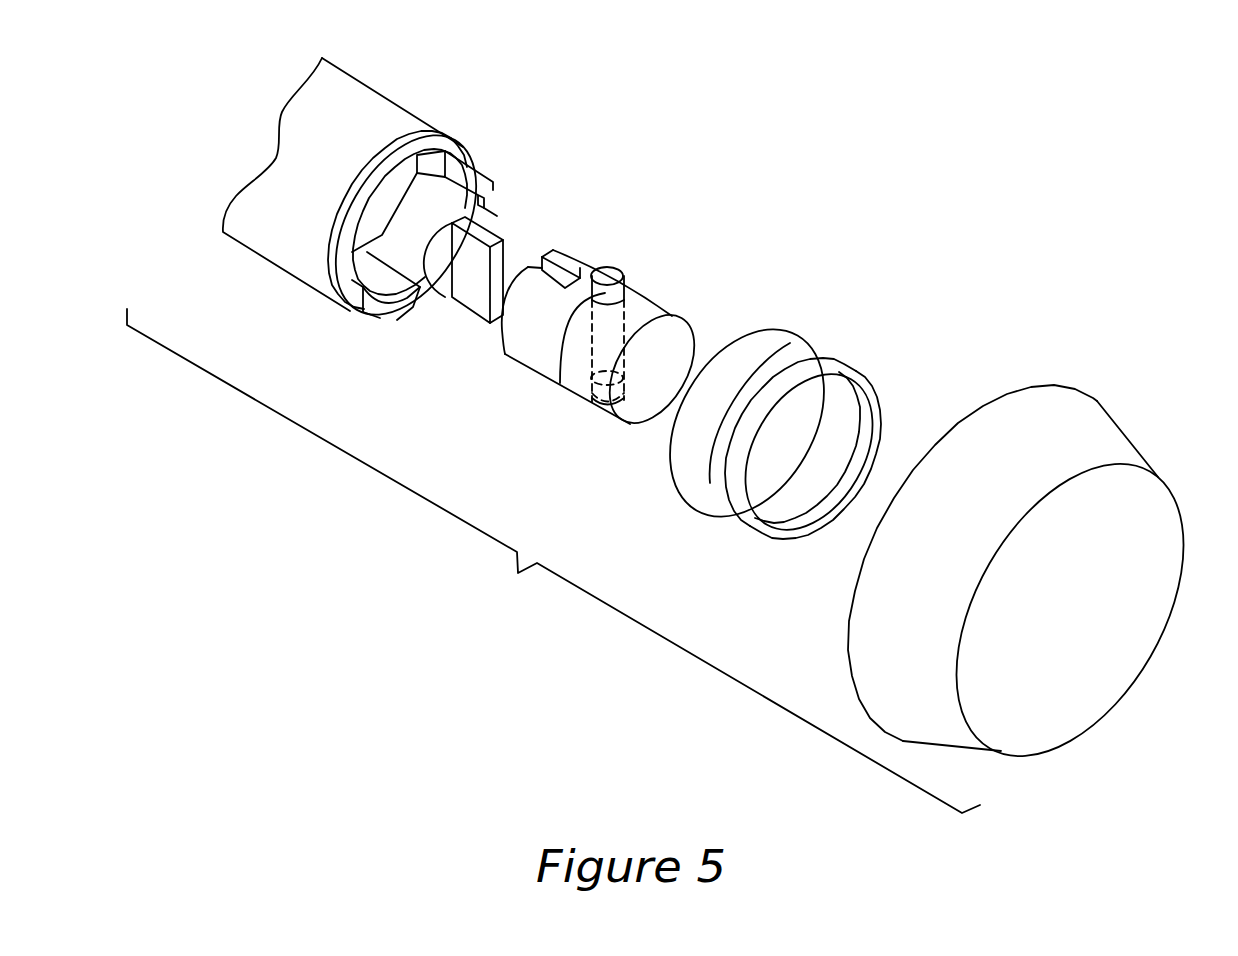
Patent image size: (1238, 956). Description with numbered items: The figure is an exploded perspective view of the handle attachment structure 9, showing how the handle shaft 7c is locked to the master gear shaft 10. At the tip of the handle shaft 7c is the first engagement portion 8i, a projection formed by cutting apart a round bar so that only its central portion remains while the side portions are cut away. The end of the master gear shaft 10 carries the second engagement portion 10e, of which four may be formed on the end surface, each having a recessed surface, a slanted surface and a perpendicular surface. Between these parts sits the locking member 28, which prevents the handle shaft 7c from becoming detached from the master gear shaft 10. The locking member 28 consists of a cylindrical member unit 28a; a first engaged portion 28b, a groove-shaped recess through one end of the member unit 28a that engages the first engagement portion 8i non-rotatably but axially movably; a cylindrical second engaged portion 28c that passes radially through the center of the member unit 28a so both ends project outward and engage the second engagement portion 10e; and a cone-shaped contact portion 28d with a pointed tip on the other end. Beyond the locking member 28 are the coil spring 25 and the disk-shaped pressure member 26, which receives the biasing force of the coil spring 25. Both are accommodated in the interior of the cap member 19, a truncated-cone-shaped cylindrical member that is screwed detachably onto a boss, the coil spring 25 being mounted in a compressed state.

The master gear shaft 10 is at (367, 108).
The second engagement portion 10e is at (432, 165).
The handle shaft 7c is at (432, 206).
The first engagement portion 8i is at (492, 232).
The damper assembly 9 is at (745, 223).
The locking member 28 is at (614, 305).
The member unit 28a is at (634, 308).
The first engaged portion 28b is at (557, 276).
The second engaged portion 28c is at (560, 383).
The contact portion 28d is at (725, 313).
The pressure member 26 is at (778, 352).
The coil spring 25 is at (870, 386).
The cap member 19 is at (1109, 439).